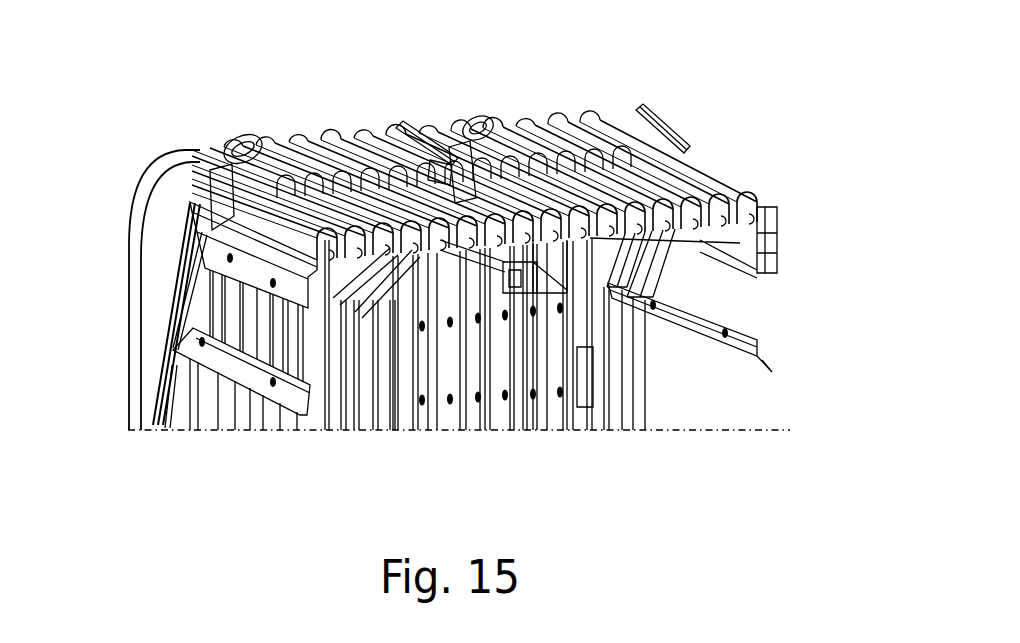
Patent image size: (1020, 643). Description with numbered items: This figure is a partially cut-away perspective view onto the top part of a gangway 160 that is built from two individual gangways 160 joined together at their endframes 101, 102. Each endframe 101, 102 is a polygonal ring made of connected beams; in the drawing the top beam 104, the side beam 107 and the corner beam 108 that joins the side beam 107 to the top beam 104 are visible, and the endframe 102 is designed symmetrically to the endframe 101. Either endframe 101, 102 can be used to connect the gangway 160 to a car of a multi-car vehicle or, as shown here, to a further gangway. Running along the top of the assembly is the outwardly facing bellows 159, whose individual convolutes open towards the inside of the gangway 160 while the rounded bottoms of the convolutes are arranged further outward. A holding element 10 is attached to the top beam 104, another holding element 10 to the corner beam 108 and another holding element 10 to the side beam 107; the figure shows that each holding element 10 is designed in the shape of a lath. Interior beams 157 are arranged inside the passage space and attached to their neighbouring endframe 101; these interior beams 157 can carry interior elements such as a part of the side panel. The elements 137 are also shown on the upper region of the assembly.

The holding element 10 is at (345, 245).
The endframe 101 is at (513, 218).
The endframe 102 is at (203, 243).
The top beam 104 is at (210, 273).
The side beam 107 is at (158, 376).
The corner beam 108 is at (175, 312).
The mounting lug 137 is at (221, 152).
The interior beam 157 is at (234, 432).
The bellows 159 is at (274, 143).
The gangway 160 is at (702, 98).